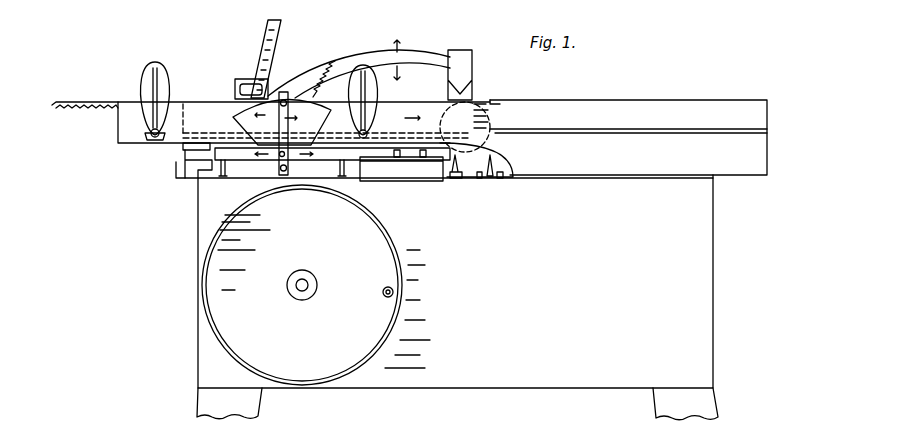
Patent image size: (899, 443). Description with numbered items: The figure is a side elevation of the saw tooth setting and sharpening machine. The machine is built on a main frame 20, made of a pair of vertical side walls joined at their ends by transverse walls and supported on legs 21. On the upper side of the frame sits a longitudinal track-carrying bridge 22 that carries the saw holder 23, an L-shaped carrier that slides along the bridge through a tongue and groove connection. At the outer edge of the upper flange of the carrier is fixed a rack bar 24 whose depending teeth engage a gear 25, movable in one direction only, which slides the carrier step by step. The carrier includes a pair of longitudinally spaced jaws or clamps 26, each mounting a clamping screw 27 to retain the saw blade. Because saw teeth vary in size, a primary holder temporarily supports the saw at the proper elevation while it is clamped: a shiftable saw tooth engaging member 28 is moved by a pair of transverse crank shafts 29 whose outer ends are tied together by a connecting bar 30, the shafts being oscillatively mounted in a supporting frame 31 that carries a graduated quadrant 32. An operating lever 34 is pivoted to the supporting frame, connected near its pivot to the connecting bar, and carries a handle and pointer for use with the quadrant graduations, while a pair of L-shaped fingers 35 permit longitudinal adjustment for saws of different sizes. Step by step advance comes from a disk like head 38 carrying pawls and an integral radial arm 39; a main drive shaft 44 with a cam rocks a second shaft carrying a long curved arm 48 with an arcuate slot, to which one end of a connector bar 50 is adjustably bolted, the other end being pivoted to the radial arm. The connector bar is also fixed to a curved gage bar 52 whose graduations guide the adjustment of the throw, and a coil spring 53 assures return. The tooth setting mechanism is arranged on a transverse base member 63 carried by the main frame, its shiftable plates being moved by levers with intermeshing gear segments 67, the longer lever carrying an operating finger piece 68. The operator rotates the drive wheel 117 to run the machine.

The main frame 20 is at (455, 281).
The legs 21 is at (255, 405).
The bridge 22 is at (628, 137).
The saw holder 23 is at (118, 133).
The rack bar 24 is at (70, 101).
The gear 25 is at (506, 147).
The jaws or clamps 26 is at (142, 76).
The clamping screw 27 is at (142, 143).
The saw tooth engaging member 28 is at (198, 162).
The transverse crank shafts 29 is at (226, 166).
The connecting bar 30 is at (255, 162).
The supporting frame 31 is at (188, 180).
The quadrant 32 is at (240, 115).
The operating lever 34 is at (296, 133).
The L-shaped fingers 35 is at (184, 150).
The disk like head 38 is at (452, 100).
The radial arm 39 is at (448, 50).
The main drive shaft 44 is at (306, 281).
The curved arm 48 is at (236, 84).
The connector bar 50 is at (333, 65).
The curved gage bar 52 is at (258, 42).
The coil spring 53 is at (322, 84).
The transverse base member 63 is at (432, 172).
The gear segments 67 is at (458, 178).
The operating finger piece 68 is at (423, 160).
The drive wheel 117 is at (316, 285).